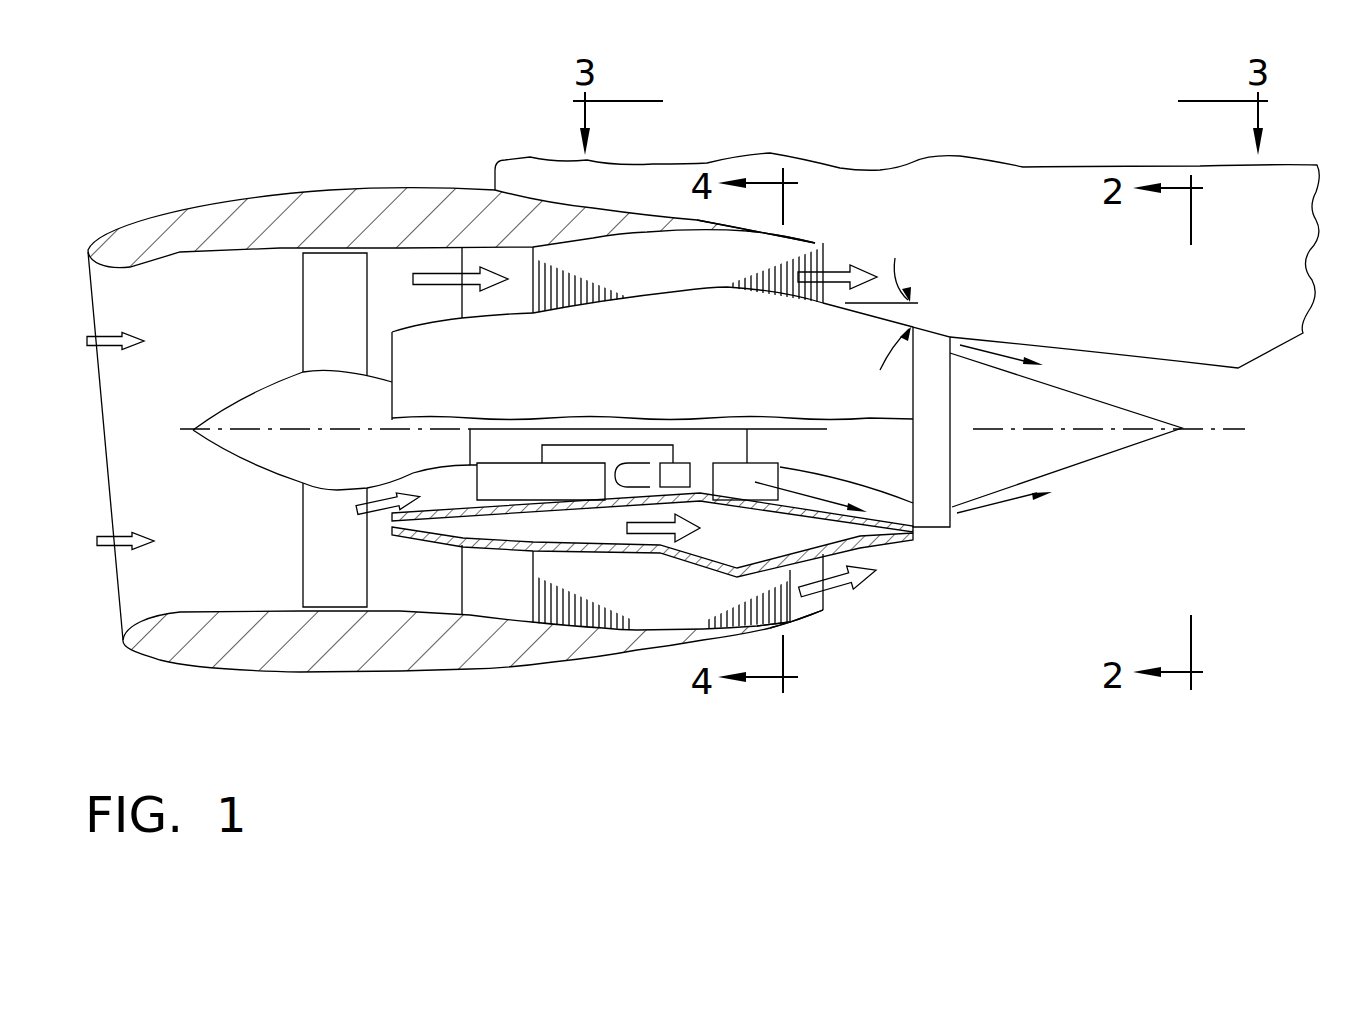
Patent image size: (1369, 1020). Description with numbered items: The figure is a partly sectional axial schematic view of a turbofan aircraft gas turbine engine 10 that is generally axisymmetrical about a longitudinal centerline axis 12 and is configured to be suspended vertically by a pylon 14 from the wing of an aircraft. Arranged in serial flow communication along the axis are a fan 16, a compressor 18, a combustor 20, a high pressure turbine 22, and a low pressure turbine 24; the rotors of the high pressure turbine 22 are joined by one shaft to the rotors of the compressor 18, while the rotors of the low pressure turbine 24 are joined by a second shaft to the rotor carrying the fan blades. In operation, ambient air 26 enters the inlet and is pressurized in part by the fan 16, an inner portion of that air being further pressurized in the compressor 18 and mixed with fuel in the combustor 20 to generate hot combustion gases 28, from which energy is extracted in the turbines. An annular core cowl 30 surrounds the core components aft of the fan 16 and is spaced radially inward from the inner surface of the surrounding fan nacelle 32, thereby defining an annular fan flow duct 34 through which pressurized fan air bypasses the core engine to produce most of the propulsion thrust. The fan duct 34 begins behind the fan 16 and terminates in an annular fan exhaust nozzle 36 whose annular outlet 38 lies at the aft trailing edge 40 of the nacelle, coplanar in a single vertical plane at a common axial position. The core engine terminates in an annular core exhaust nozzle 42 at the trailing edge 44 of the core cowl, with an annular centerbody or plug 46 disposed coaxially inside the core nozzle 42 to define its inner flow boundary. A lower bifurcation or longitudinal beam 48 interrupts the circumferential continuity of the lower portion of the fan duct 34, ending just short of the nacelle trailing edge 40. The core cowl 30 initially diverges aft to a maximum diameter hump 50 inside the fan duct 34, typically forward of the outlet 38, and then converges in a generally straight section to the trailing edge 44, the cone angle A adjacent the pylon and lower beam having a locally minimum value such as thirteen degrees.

The turbofan aircraft gas turbine engine 10 is at (220, 184).
The longitudinal centerline axis 12 is at (1222, 428).
The pylon 14 is at (1033, 278).
The fan 16 is at (321, 321).
The compressor 18 is at (523, 488).
The combustor 20 is at (630, 463).
The high pressure turbine 22 is at (689, 462).
The low pressure turbine 24 is at (768, 462).
The ambient air 26 is at (110, 333).
The hot combustion gases 28 is at (797, 492).
The core cowl 30 is at (463, 373).
The fan nacelle 32 is at (469, 653).
The fan flow duct 34 is at (571, 275).
The fan exhaust nozzle 36 is at (815, 240).
The fan outlet 38 is at (843, 615).
The nacelle trailing edge 40 is at (823, 248).
The core exhaust nozzle 42 is at (947, 545).
The core cowl trailing edge 44 is at (950, 337).
The centerbody or plug 46 is at (1016, 461).
The lower bifurcation or longitudinal beam 48 is at (532, 590).
The maximum diameter hump 50 is at (743, 287).
The cone angle A is at (898, 256).